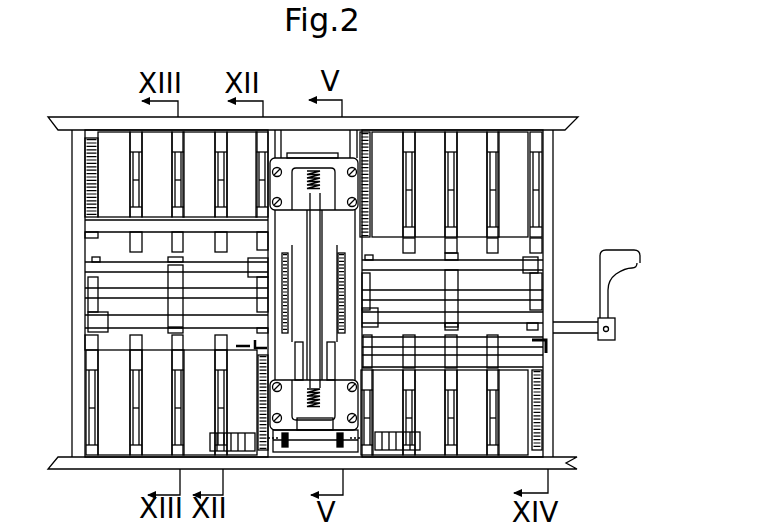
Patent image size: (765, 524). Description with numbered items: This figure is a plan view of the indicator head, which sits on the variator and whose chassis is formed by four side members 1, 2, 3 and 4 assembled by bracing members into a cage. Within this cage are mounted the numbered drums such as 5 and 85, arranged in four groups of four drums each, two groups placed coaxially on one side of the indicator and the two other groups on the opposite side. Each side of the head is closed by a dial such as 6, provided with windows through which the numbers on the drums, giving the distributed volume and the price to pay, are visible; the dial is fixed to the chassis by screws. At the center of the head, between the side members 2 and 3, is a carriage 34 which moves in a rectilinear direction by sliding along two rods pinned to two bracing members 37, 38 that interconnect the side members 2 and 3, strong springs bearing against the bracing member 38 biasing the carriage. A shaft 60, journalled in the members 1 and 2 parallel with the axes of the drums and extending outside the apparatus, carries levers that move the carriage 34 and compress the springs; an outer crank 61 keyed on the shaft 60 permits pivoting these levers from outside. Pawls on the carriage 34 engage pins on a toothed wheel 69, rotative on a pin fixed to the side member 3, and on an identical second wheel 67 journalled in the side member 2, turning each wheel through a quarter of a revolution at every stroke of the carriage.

The side member 1 is at (552, 171).
The side member 2 is at (352, 140).
The side member 3 is at (286, 140).
The side member 4 is at (80, 168).
The numbered drum 5 is at (513, 446).
The dial 6 is at (568, 460).
The carriage 34 is at (313, 415).
The bracing member 37 is at (387, 412).
The bracing member 38 is at (356, 172).
The shaft 60 is at (584, 330).
The outer crank 61 is at (636, 262).
The toothed wheel 67 is at (340, 253).
The toothed wheel 69 is at (284, 253).
The numbered drum 85 is at (441, 443).